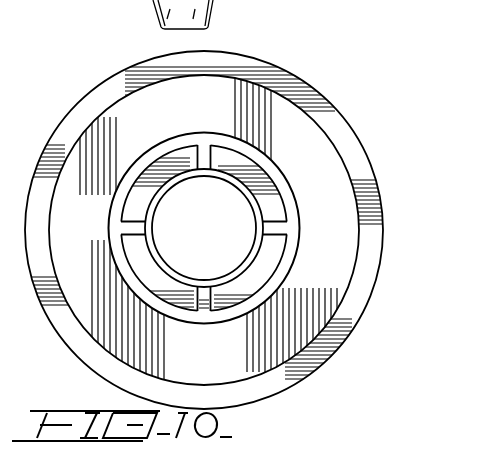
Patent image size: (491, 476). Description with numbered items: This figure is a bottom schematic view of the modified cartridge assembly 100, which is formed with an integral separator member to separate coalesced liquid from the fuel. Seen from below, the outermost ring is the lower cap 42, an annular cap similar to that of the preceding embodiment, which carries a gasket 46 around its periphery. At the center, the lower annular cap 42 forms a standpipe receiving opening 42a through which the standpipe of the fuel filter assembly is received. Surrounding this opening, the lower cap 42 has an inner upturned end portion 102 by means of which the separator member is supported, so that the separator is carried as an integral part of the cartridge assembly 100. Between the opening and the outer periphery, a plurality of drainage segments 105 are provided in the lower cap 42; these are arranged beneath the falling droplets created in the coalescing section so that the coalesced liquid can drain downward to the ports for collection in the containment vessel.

The cartridge assembly 100 is at (272, 60).
The lower cap 42 is at (358, 178).
The gasket 46 is at (148, 133).
The drainage segments 105 is at (252, 174).
The inner upturned end portion 102 is at (129, 278).
The standpipe receiving opening 42a is at (231, 224).